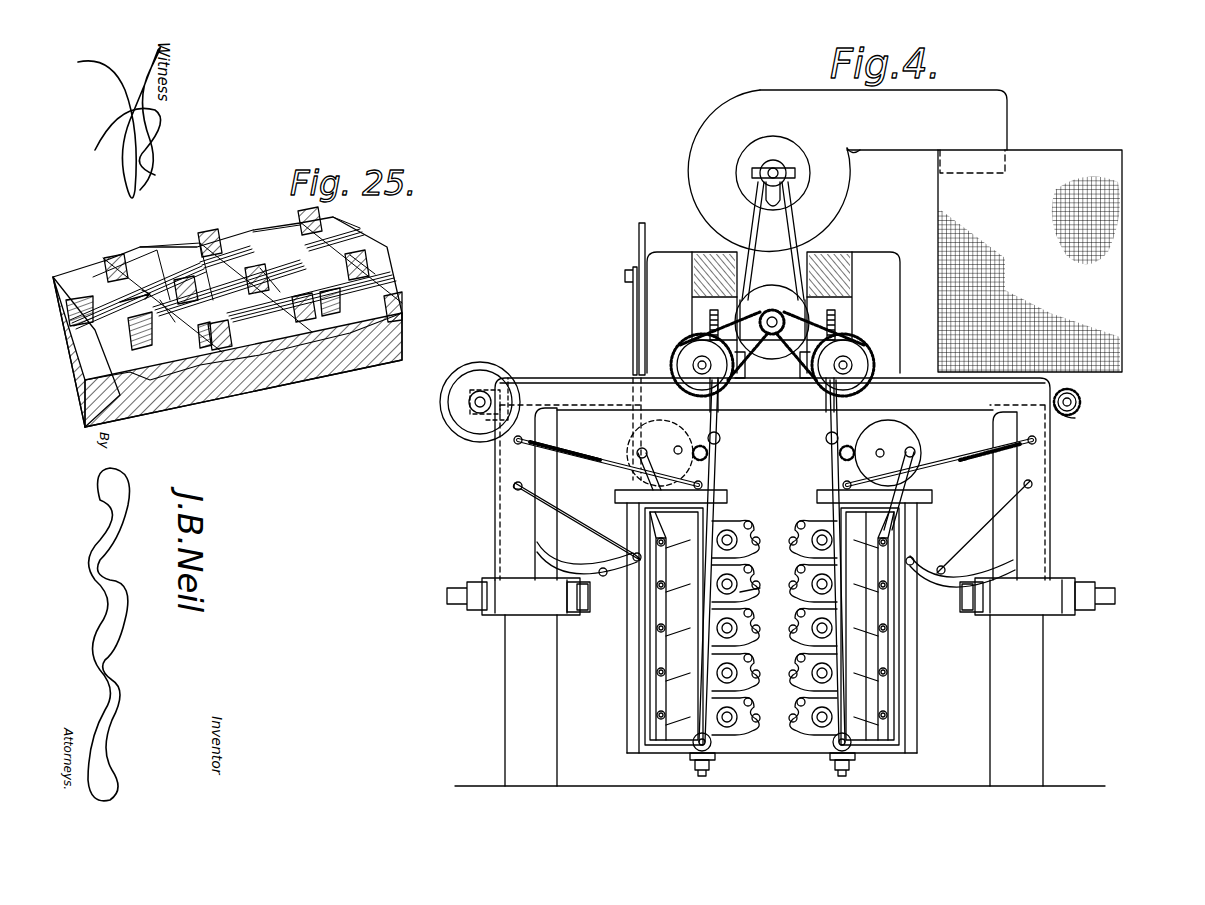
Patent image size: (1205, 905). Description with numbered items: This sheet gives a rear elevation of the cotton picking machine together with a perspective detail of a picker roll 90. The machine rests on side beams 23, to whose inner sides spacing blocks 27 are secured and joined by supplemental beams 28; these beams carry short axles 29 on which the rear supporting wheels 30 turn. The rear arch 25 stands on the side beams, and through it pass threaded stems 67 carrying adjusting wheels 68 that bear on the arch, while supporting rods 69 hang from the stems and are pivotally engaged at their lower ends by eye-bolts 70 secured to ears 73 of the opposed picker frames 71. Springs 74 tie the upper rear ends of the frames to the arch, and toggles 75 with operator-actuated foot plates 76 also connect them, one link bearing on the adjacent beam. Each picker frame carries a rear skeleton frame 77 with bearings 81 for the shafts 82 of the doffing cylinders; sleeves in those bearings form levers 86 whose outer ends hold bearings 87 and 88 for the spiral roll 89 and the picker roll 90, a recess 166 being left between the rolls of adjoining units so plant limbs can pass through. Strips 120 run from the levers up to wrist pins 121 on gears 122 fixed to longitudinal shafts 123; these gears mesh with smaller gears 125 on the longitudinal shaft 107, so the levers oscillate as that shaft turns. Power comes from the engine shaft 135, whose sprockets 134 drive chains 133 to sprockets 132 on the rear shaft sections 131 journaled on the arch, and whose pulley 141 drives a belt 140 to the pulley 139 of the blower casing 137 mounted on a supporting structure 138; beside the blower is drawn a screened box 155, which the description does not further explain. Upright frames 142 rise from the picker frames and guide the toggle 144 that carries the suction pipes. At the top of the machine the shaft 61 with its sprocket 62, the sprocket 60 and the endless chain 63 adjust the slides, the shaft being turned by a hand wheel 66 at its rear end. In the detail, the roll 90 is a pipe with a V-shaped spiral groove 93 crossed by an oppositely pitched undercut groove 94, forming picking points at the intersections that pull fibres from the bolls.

In FIG. 25, the picker roll 90 is at (362, 362).
In FIG. 4, the picker roll 90 is at (792, 580).
In FIG. 25, the V-shaped spiral groove 93 is at (180, 258).
In FIG. 25, the oppositely pitched spiral groove 94 is at (250, 395).
In FIG. 4, the blower casing 137 is at (707, 153).
In FIG. 4, the blower pulley 139 is at (776, 162).
In FIG. 4, the belt 140 is at (800, 210).
In FIG. 4, the dust collecting box with screen 155 is at (1122, 278).
In FIG. 4, the supporting structure 138 is at (690, 298).
In FIG. 4, the chains 133 is at (822, 282).
In FIG. 4, the engine shaft 135 is at (750, 280).
In FIG. 4, the toggle 144 is at (639, 248).
In FIG. 4, the upright frames 142 is at (630, 303).
In FIG. 4, the adjusting wheels 68 is at (712, 330).
In FIG. 4, the engine shaft pulley 141 is at (766, 290).
In FIG. 4, the engine shaft sprockets 134 is at (780, 308).
In FIG. 4, the sprocket 132 is at (722, 388).
In FIG. 4, the rear shaft section 131 is at (848, 362).
In FIG. 4, the rear arch 25 is at (578, 383).
In FIG. 4, the threaded stems 67 is at (826, 424).
In FIG. 4, the supporting rods 69 is at (828, 474).
In FIG. 4, the smaller gears 125 is at (708, 460).
In FIG. 4, the hand wheel 66 is at (462, 378).
In FIG. 4, the shaft 61 is at (470, 406).
In FIG. 4, the sprocket 62 is at (470, 438).
In FIG. 4, the sprocket 60 is at (1082, 404).
In FIG. 4, the endless chain 63 is at (1078, 418).
In FIG. 4, the springs 74 is at (584, 462).
In FIG. 4, the longitudinal shafts 123 is at (648, 462).
In FIG. 4, the longitudinal shaft 107 is at (888, 453).
In FIG. 4, the gears 122 is at (905, 444).
In FIG. 4, the wrist pins 121 is at (914, 458).
In FIG. 4, the toggles 75 is at (582, 546).
In FIG. 4, the foot plates 76 is at (538, 548).
In FIG. 4, the spacing blocks 27 is at (540, 618).
In FIG. 4, the supplemental beams 28 is at (578, 616).
In FIG. 4, the short axles 29 is at (454, 612).
In FIG. 4, the side beams 23 is at (476, 580).
In FIG. 4, the rear supporting wheels 30 is at (505, 719).
In FIG. 4, the picker frames 71 is at (630, 686).
In FIG. 4, the rear skeleton frame 77 is at (640, 736).
In FIG. 4, the levers 86 is at (888, 646).
In FIG. 4, the strips 120 is at (896, 655).
In FIG. 4, the bearings 81 is at (724, 547).
In FIG. 4, the spiral roll bearings 87 is at (770, 526).
In FIG. 4, the picker roll bearings 88 is at (752, 548).
In FIG. 4, the spiral roll 89 is at (752, 568).
In FIG. 4, the shafts 82 is at (746, 608).
In FIG. 4, the recess 166 is at (784, 656).
In FIG. 4, the eye-bolts 70 is at (716, 746).
In FIG. 4, the ears 73 is at (832, 762).